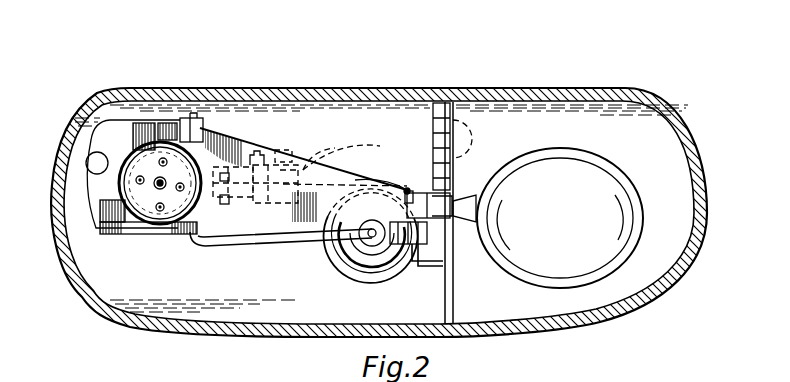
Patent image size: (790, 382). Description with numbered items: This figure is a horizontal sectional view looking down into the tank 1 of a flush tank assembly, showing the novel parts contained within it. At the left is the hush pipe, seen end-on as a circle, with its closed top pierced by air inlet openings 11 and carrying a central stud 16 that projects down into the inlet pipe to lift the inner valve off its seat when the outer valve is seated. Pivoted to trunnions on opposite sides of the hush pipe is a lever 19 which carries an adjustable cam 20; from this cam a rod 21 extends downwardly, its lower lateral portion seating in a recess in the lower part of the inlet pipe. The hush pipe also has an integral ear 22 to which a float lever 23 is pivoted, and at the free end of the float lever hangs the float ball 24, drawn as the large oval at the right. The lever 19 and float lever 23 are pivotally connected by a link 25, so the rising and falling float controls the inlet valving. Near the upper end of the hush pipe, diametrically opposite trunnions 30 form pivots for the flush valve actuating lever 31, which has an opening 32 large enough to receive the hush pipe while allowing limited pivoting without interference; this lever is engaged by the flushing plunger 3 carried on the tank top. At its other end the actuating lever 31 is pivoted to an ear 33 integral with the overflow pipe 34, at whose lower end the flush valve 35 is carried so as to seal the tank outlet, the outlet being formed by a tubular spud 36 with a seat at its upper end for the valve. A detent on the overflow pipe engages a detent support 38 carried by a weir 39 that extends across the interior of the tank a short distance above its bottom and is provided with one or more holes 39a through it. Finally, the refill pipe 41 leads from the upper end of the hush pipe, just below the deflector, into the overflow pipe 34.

The tank 1 is at (73, 274).
The flushing plunger 3 is at (67, 144).
The air inlet openings 11 is at (138, 177).
The stud 16 is at (158, 185).
The lever 19 is at (283, 150).
The adjustable cam 20 is at (207, 128).
The rod 21 is at (200, 120).
The ear 22 is at (207, 246).
The float lever 23 is at (347, 157).
The float ball 24 is at (560, 218).
The link 25 is at (270, 186).
The trunnions 30 is at (166, 128).
The flush valve actuating lever 31 is at (303, 170).
The opening 32 is at (122, 228).
The ear 33 is at (453, 228).
The overflow pipe 34 is at (343, 268).
The flush valve 35 is at (338, 246).
The tubular spud 36 is at (366, 281).
The detent support 38 is at (424, 268).
The weir 39 is at (457, 296).
The holes 39a is at (472, 132).
The refill pipe 41 is at (248, 247).